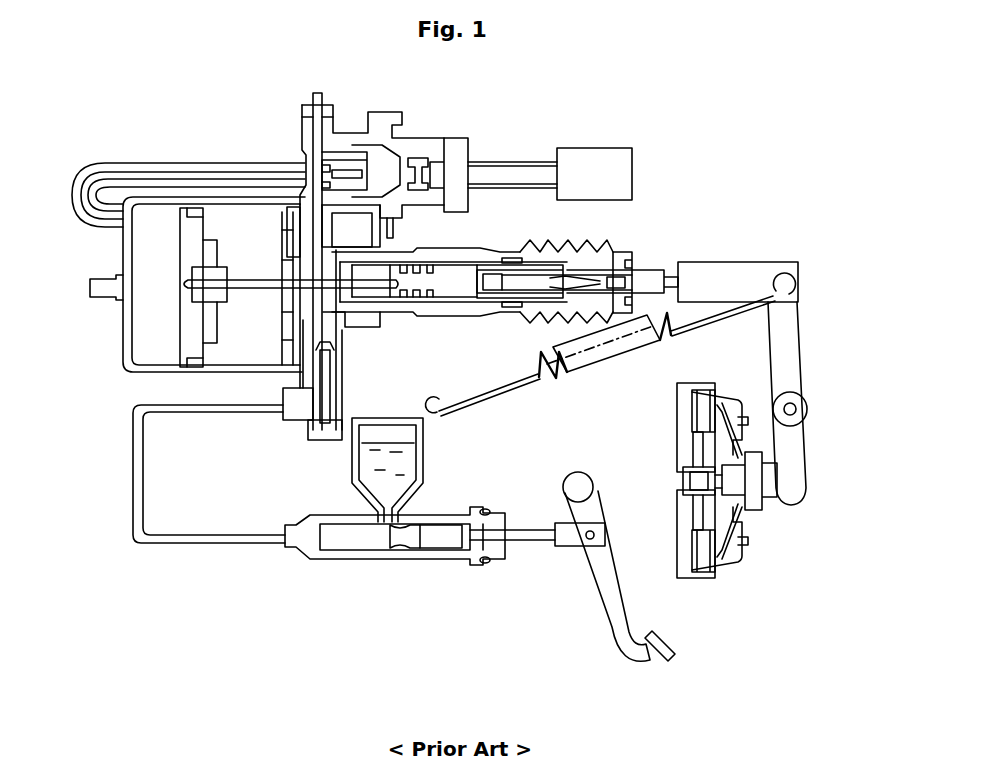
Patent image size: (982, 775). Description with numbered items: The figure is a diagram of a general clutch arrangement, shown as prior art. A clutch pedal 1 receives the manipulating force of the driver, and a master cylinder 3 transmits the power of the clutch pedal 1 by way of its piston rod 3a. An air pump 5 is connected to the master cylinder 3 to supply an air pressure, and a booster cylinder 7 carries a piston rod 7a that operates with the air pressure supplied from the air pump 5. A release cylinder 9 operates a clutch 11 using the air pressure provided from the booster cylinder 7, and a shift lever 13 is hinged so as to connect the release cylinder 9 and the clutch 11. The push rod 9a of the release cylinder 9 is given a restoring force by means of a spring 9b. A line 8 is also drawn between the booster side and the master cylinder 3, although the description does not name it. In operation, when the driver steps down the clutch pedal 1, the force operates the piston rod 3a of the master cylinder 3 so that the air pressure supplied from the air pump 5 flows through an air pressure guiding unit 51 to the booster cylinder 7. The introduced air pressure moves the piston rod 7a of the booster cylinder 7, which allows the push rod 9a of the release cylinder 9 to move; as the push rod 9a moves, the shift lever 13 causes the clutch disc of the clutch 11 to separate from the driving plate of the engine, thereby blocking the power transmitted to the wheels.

The clutch pedal 1 is at (672, 658).
The master cylinder 3 is at (345, 560).
The piston rod 3a is at (430, 549).
The air pump 5 is at (592, 148).
The air pressure guiding unit 51 is at (456, 143).
The booster cylinder 7 is at (122, 334).
The piston rod 7a is at (245, 290).
The hydraulic pipe 8 is at (133, 475).
The release cylinder 9 is at (618, 240).
The push rod 9a is at (645, 273).
The spring 9b is at (720, 322).
The clutch 11 is at (690, 580).
The shift lever 13 is at (805, 342).